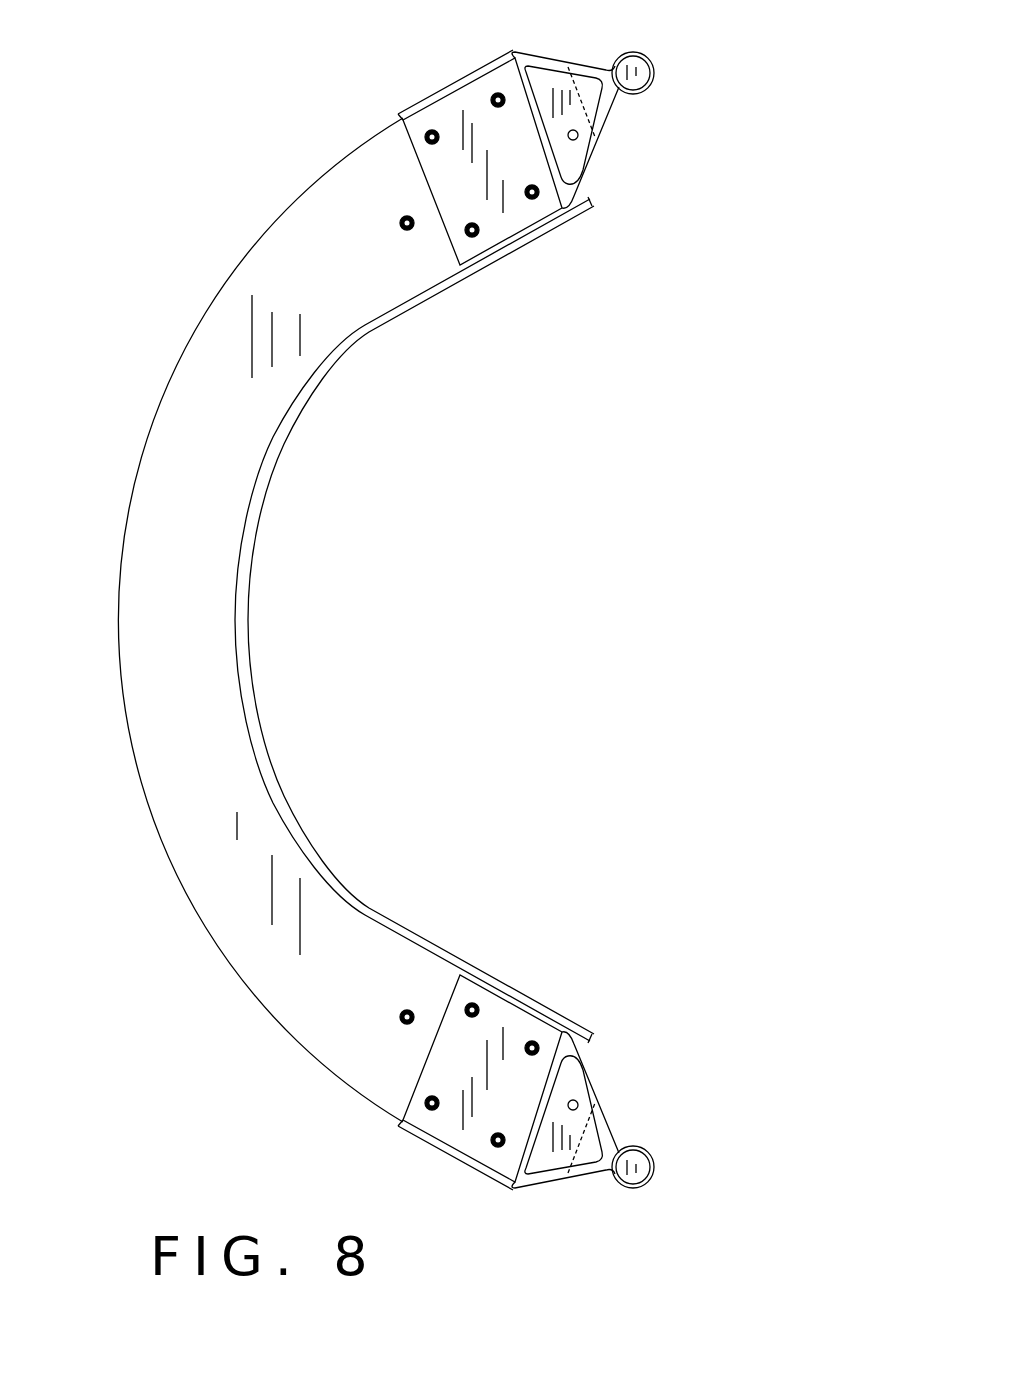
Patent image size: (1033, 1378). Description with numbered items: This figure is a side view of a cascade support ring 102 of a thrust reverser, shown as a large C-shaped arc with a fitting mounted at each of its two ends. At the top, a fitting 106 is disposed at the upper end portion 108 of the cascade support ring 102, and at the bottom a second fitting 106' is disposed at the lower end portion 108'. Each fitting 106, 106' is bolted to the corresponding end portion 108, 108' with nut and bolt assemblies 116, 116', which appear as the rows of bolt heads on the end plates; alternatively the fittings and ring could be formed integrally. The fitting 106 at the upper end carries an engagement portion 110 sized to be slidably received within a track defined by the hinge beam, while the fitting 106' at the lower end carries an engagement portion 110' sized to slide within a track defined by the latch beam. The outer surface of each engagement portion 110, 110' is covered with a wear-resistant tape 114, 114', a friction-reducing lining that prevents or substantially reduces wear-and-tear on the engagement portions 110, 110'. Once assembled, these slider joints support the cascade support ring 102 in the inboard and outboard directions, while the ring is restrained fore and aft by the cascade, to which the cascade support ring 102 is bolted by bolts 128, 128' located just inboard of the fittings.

The cascade support ring 102 is at (256, 103).
The fitting 106 is at (565, 104).
The fitting 106' is at (603, 1110).
The upper end portion 108 is at (446, 157).
The lower end portion 108' is at (441, 1082).
The engagement portion 110 is at (676, 106).
The engagement portion 110' is at (612, 1207).
The wear-resistant tape 114 is at (689, 73).
The wear-resistant tape 114' is at (685, 1163).
The nut and bolt assemblies 116 is at (520, 148).
The nut and bolt assemblies 116' is at (492, 1072).
The bolt 128 is at (449, 275).
The bolt 128' is at (438, 962).